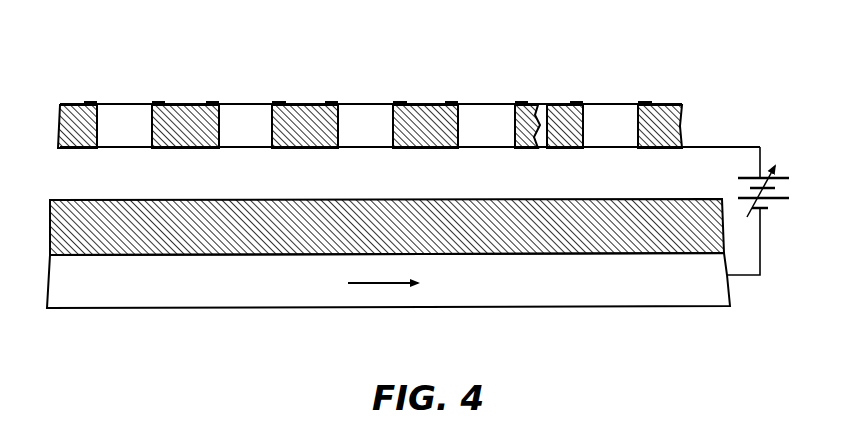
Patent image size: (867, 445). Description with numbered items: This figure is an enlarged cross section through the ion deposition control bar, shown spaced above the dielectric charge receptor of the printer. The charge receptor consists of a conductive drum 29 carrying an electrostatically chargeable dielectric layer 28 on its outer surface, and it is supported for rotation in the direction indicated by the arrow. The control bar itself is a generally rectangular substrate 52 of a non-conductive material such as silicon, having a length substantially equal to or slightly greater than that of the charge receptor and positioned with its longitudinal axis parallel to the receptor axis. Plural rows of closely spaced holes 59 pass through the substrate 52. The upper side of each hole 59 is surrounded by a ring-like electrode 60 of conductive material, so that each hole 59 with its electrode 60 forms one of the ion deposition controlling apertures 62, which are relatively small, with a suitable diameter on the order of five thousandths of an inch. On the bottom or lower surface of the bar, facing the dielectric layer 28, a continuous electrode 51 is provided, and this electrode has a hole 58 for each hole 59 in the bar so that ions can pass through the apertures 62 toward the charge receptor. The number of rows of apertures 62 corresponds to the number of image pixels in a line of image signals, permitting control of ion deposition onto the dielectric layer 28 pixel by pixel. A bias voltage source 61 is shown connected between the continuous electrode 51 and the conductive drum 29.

The dielectric layer 28 is at (48, 230).
The conductive drum 29 is at (47, 282).
The continuous electrode 51 is at (68, 160).
The substrate 52 is at (58, 125).
The holes 58 is at (152, 148).
The holes 59 is at (368, 103).
The ring-like electrode 60 is at (212, 102).
The bias voltage source 61 is at (790, 122).
The ion deposition controlling apertures 62 is at (604, 106).